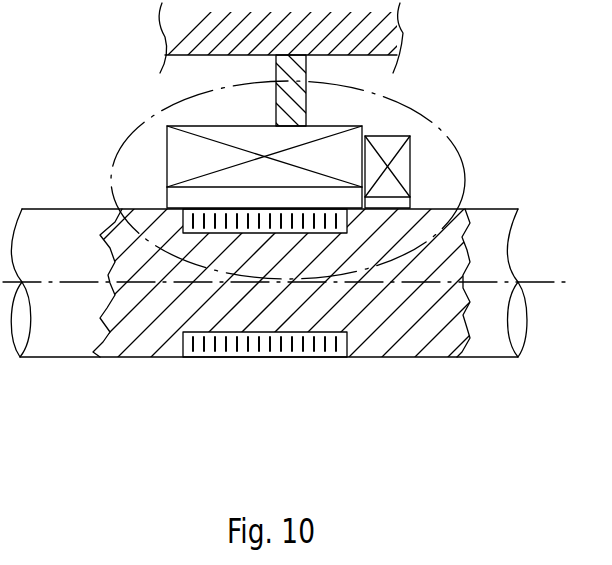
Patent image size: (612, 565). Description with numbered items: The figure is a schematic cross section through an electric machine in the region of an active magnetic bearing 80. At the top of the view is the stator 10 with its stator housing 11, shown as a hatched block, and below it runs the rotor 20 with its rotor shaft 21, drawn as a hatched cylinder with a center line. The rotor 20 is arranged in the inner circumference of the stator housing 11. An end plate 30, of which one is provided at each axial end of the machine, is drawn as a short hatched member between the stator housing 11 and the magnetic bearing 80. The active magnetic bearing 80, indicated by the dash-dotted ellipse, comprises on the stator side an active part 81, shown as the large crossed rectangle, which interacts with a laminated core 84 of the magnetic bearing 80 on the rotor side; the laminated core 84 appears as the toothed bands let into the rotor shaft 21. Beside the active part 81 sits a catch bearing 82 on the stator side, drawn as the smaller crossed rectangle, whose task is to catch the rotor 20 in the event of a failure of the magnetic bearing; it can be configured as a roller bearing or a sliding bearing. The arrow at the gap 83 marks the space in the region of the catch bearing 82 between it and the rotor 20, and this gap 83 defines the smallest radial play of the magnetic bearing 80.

The stator 10 is at (314, 38).
The stator housing 11 is at (387, 36).
The rotor 20 is at (298, 309).
The rotor shaft 21 is at (490, 340).
The end plate 30 is at (290, 103).
The active magnetic bearing 80 is at (112, 170).
The active part 81 is at (180, 147).
The catch bearing 82 is at (400, 162).
The gap 83 is at (412, 206).
The laminated core 84 is at (264, 345).